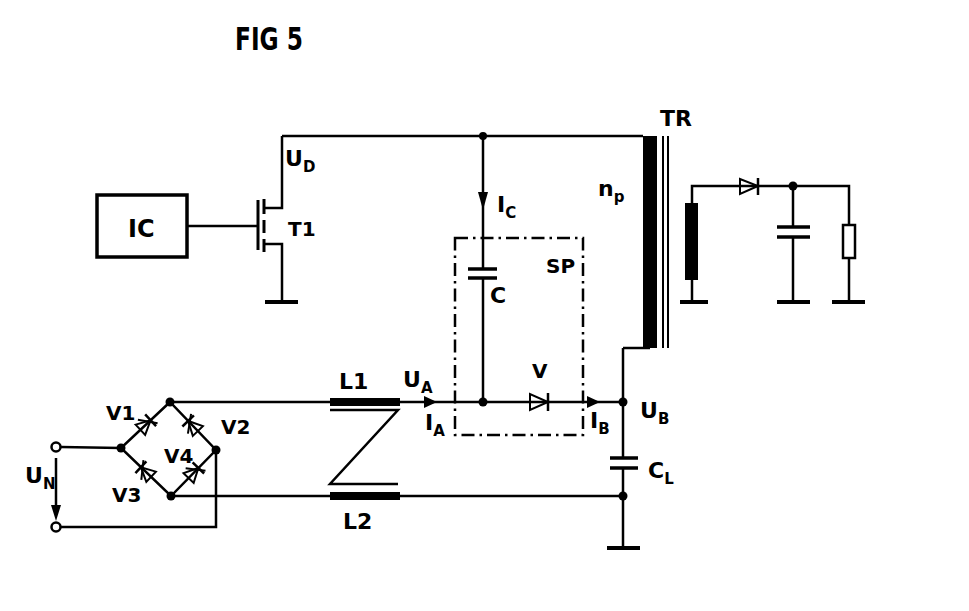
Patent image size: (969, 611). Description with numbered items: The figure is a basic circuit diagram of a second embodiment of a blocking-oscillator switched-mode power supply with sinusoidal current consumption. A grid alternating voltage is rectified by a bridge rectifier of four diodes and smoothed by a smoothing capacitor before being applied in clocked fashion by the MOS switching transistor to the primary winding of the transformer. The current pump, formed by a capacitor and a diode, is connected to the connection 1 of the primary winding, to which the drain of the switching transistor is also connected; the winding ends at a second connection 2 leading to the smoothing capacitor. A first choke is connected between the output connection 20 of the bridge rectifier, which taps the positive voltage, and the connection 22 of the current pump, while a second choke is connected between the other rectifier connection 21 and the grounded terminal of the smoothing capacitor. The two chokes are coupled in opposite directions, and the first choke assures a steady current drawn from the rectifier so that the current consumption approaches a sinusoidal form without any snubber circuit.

The connection of the primary winding 1 is at (652, 227).
The second terminal of transformer primary winding 2 is at (645, 368).
The output connection of the bridge rectifier 20 is at (165, 399).
The connection of the bridge rectifier 21 is at (176, 500).
The connection of the current pump 22 is at (498, 390).